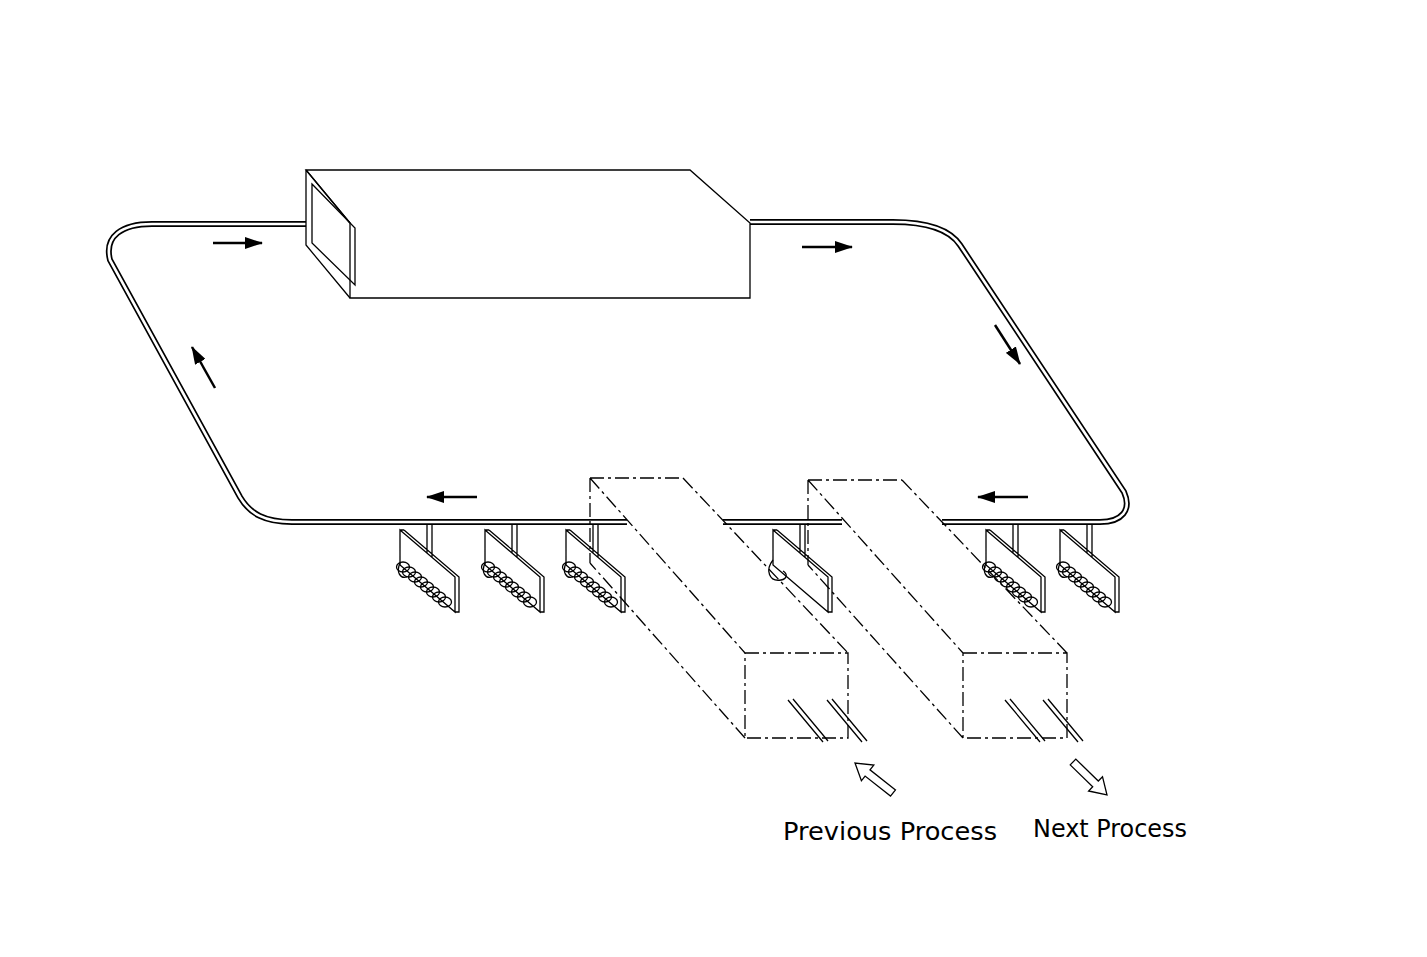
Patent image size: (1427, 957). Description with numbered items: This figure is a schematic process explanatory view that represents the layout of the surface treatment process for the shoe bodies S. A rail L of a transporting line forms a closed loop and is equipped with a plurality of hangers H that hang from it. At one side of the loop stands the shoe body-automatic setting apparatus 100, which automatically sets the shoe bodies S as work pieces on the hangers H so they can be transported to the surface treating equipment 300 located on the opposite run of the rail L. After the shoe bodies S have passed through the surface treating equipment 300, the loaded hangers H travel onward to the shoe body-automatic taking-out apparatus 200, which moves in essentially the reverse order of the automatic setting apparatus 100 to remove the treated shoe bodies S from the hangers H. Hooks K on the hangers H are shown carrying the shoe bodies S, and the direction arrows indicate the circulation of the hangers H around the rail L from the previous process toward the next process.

The surface treating equipment 300 is at (561, 167).
The rail L is at (963, 243).
The shoe body-automatic setting apparatus 100 is at (653, 477).
The shoe body-automatic taking-out apparatus 200 is at (861, 479).
The hanger H is at (400, 541).
The hook K is at (400, 566).
The shoe bodies S is at (428, 602).